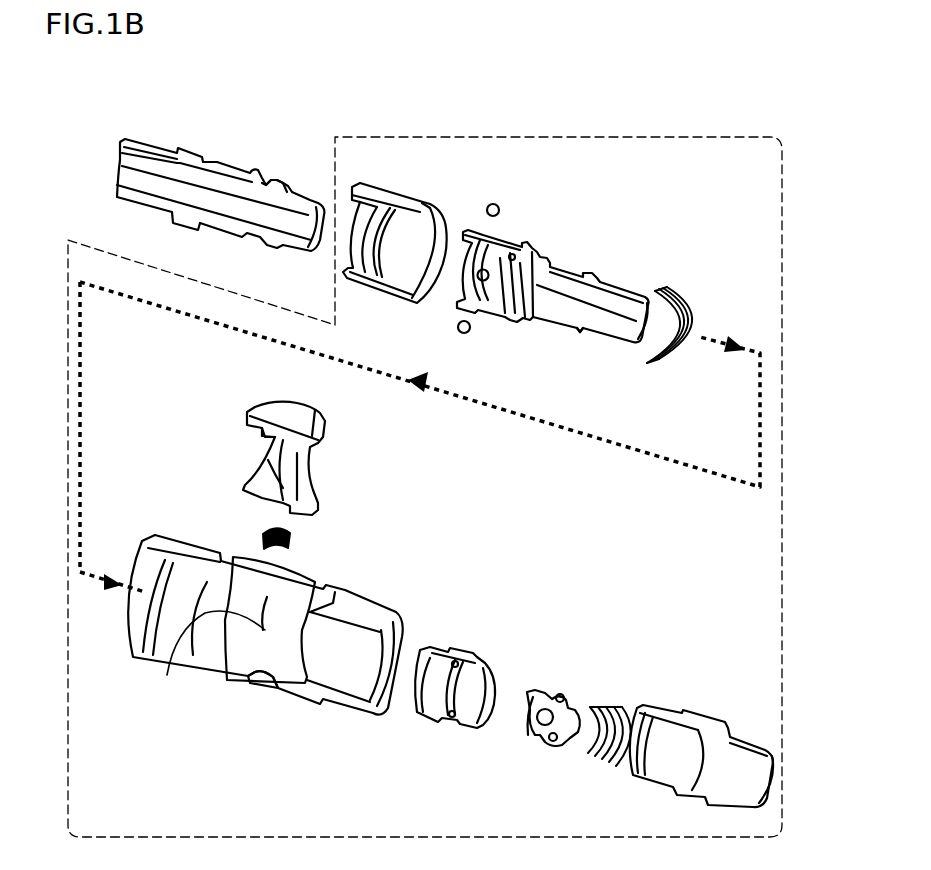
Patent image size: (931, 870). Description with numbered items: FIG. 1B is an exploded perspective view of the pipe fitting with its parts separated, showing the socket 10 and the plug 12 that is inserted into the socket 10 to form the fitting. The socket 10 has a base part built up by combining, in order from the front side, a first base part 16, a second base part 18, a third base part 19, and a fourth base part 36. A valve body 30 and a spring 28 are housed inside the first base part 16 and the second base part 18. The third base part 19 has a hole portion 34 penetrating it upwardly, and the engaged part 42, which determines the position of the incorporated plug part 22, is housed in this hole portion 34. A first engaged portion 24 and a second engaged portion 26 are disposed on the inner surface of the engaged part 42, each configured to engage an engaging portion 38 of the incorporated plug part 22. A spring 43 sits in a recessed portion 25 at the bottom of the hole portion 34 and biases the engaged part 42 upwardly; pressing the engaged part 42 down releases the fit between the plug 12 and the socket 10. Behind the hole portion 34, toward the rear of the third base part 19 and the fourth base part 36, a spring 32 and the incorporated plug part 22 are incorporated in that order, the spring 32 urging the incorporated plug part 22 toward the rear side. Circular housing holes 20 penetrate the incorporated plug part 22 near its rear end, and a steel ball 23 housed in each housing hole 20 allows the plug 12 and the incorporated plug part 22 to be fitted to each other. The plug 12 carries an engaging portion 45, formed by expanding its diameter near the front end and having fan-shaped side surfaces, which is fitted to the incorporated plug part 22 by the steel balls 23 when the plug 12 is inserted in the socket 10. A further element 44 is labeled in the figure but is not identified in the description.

The socket 10 is at (425, 474).
The plug 12 is at (327, 141).
The engaging portion 45 is at (277, 181).
The fourth base part 36 is at (404, 197).
The incorporated plug part 22 is at (663, 220).
The housing holes 20 is at (478, 234).
The steel ball 23 is at (500, 210).
The engaging portion 38 is at (578, 333).
The spring 32 is at (682, 291).
The engaged part 42 is at (326, 440).
The second engaged portion 26 is at (265, 433).
The first engaged portion 24 is at (267, 468).
The spring 43 is at (297, 543).
The third base part 19 is at (344, 768).
The hole portion 34 is at (167, 672).
The recessed portion 25 is at (263, 688).
The second base part 18 is at (433, 725).
The valve body 30 is at (533, 743).
The hole 44 is at (544, 692).
The spring 28 is at (595, 763).
The first base part 16 is at (663, 788).